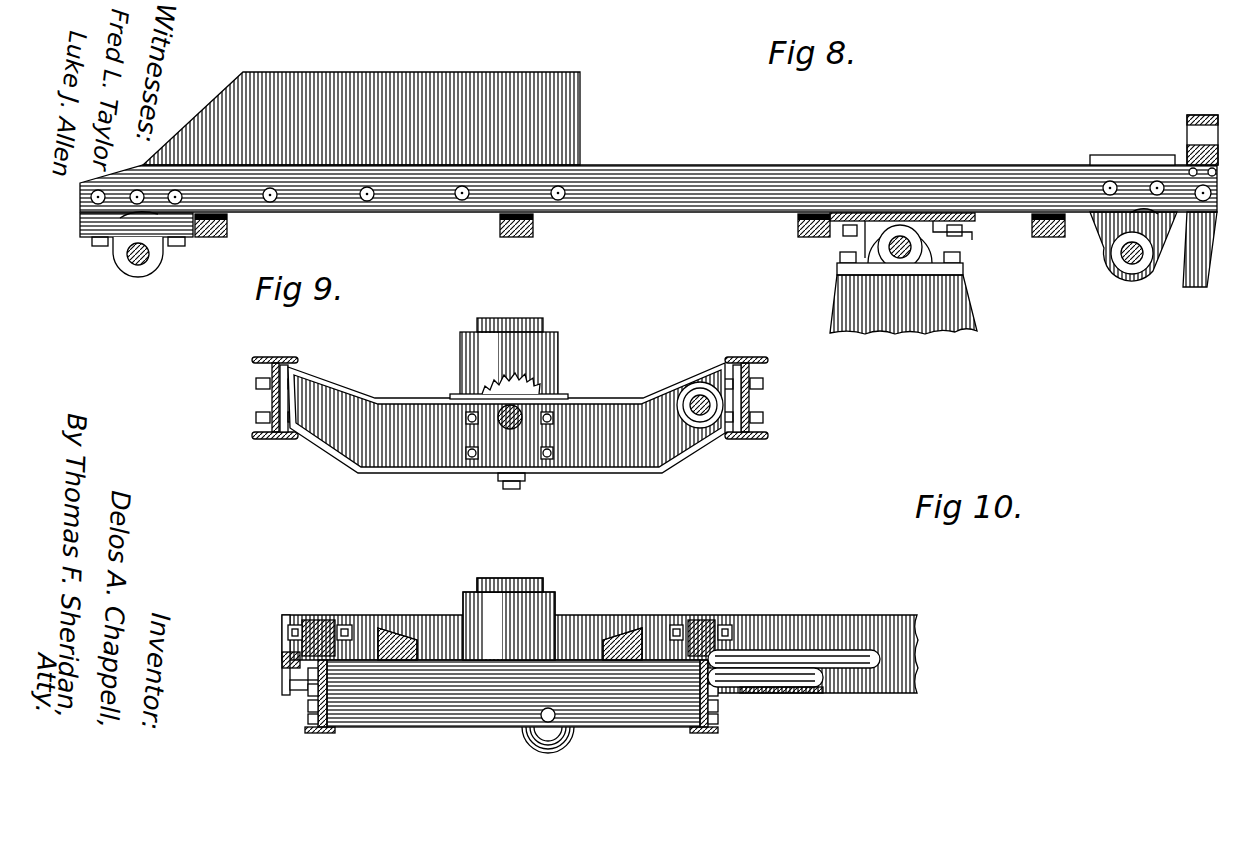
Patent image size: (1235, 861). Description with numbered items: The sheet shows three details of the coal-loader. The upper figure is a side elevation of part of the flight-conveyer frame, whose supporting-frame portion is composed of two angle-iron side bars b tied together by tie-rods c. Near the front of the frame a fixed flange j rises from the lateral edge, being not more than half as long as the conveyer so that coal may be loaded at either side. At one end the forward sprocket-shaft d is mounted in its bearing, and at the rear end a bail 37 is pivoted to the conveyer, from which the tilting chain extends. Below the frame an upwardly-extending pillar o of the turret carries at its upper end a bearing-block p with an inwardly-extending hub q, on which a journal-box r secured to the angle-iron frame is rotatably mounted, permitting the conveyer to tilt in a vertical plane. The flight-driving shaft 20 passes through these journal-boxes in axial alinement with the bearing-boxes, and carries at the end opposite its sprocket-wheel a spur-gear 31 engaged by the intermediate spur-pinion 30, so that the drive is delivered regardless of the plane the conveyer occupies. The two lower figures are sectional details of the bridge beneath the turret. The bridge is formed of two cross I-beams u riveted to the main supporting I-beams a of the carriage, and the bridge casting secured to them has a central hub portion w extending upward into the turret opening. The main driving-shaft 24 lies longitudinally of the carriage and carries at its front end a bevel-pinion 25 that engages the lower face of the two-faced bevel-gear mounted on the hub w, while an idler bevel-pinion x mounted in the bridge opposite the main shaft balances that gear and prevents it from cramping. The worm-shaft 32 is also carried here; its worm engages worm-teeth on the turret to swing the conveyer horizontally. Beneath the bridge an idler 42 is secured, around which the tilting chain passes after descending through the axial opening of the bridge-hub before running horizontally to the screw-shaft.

In FIG. 8, the side bars b is at (150, 212).
In FIG. 8, the fixed flanges j is at (515, 95).
In FIG. 8, the tie-rods c is at (228, 233).
In FIG. 8, the rotatable shaft d is at (141, 263).
In FIG. 8, the spur-gear 31 is at (862, 238).
In FIG. 8, the flight-driving shaft 20 is at (888, 257).
In FIG. 8, the hubs q is at (917, 241).
In FIG. 8, the journal-boxes r is at (927, 253).
In FIG. 8, the bearing-blocks p is at (962, 268).
In FIG. 8, the pillars o is at (958, 311).
In FIG. 8, the intermediate spur-pinion 30 is at (860, 316).
In FIG. 8, the end roller bracket a' is at (1119, 252).
In FIG. 8, the bail 37 is at (1193, 250).
In FIG. 9, the I-beams a is at (505, 398).
In FIG. 10, the I-beams a is at (584, 651).
In FIG. 9, the cross members u is at (393, 412).
In FIG. 10, the cross members u is at (316, 626).
In FIG. 9, the central hub portion w is at (470, 353).
In FIG. 10, the central hub portion w is at (554, 605).
In FIG. 9, the bevel-pinion 25 is at (521, 386).
In FIG. 10, the bevel-pinion 25 is at (628, 634).
In FIG. 9, the main driving-shaft 24 is at (525, 410).
In FIG. 10, the main driving-shaft 24 is at (768, 672).
In FIG. 9, the worm-shaft 32 is at (699, 398).
In FIG. 10, the worm-shaft 32 is at (850, 660).
In FIG. 9, the idler 42 is at (500, 480).
In FIG. 10, the idler 42 is at (556, 745).
In FIG. 10, the idler bevel-pinion x is at (388, 626).